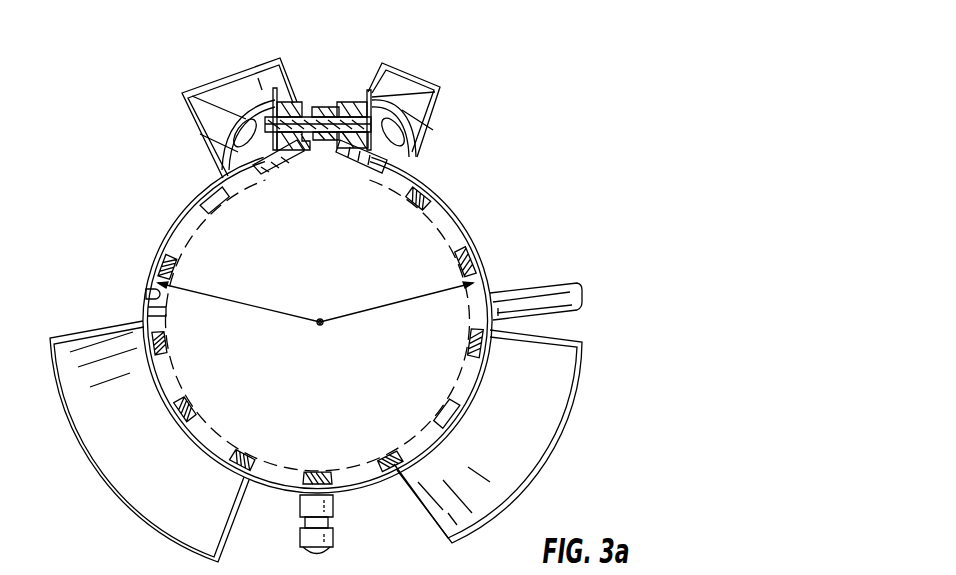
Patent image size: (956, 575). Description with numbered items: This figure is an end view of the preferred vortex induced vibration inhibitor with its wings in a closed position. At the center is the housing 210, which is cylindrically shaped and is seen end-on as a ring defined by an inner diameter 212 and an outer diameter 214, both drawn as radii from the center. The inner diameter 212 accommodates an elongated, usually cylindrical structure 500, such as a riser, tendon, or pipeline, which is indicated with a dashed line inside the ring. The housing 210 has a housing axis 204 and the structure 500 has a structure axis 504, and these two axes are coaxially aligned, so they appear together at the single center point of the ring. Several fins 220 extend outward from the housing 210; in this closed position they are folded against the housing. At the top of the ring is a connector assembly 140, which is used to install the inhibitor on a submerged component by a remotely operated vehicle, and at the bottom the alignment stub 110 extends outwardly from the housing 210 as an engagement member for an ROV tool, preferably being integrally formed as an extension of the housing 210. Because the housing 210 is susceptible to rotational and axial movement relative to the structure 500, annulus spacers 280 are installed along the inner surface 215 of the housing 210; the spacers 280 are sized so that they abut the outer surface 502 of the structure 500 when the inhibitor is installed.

The alignment stub 110 is at (335, 530).
The connector assembly 140 is at (343, 66).
The housing axis 204 is at (318, 326).
The housing 210 is at (450, 200).
The inner diameter 212 is at (397, 297).
The outer diameter 214 is at (237, 297).
The inner surface 215 is at (152, 292).
The fin 220 is at (264, 100).
The annulus spacer 280 is at (160, 264).
The structure 500 is at (193, 227).
The outer surface 502 is at (160, 310).
The structure axis 504 is at (322, 326).